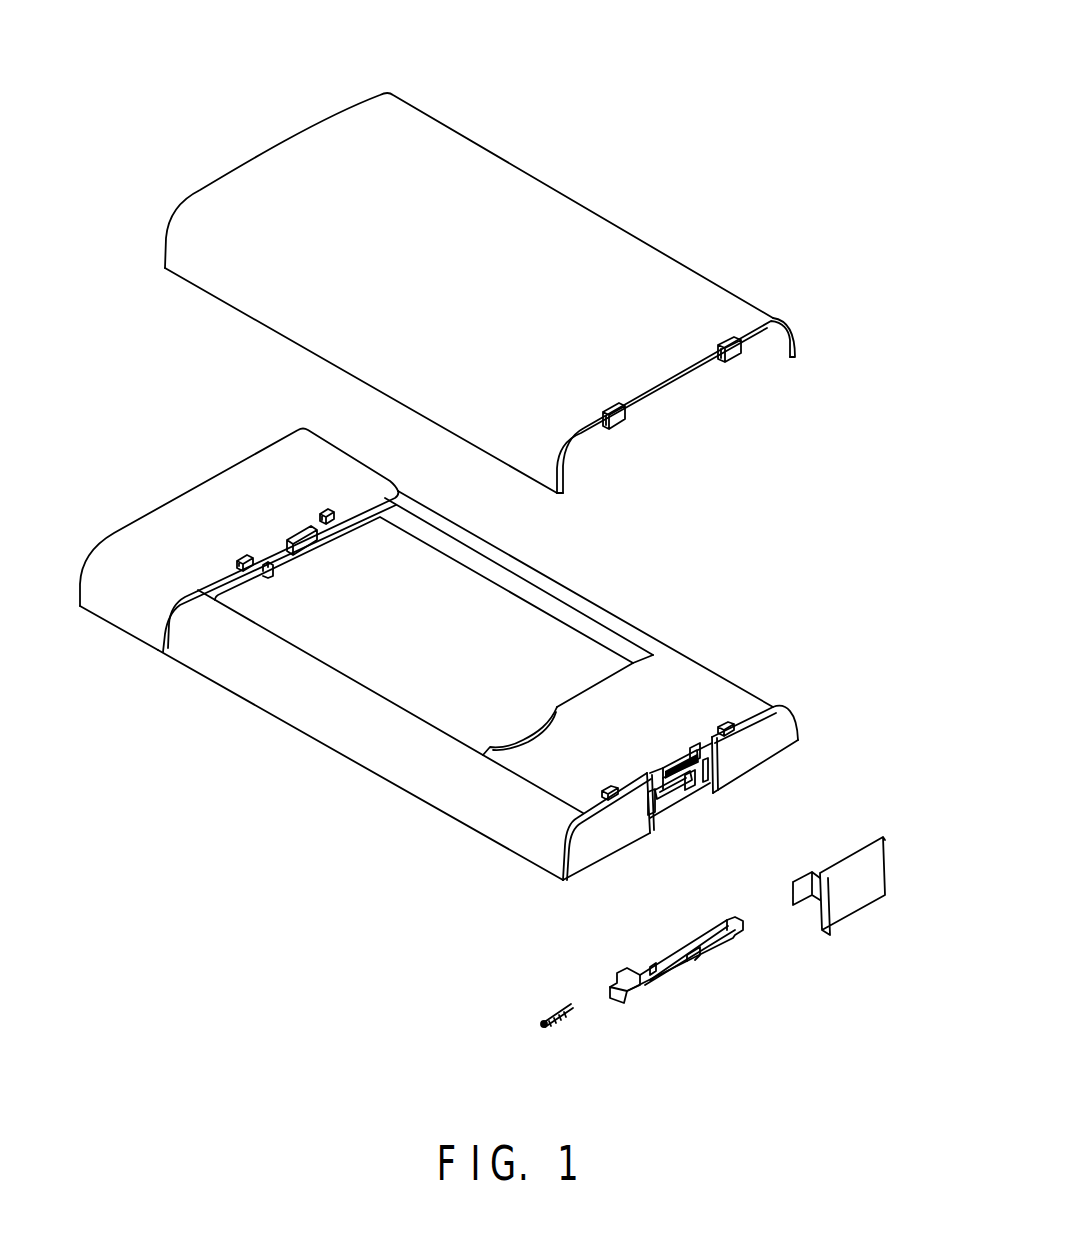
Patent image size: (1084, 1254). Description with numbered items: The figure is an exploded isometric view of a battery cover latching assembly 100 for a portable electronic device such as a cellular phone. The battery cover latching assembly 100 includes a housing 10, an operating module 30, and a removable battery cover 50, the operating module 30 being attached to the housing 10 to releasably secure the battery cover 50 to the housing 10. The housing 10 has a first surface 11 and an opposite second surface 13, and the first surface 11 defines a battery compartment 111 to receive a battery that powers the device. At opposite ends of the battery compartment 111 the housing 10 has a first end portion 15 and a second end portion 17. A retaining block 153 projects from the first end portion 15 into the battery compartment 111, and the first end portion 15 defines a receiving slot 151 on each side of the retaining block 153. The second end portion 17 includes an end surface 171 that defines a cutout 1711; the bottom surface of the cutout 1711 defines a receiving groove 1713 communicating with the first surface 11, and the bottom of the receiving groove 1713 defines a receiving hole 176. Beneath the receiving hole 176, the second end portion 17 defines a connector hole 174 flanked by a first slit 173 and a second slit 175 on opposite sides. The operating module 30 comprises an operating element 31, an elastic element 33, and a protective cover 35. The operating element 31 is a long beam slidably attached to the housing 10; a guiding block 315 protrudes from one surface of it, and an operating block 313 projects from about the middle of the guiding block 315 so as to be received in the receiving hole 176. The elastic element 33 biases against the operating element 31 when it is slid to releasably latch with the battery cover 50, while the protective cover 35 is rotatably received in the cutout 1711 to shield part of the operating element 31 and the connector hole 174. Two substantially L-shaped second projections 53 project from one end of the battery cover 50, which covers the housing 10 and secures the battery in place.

The battery cover latching assembly 100 is at (540, 60).
The battery cover 50 is at (477, 197).
The second projections 53 is at (733, 353).
The housing 10 is at (206, 438).
The first end portion 15 is at (208, 522).
The first surface 11 is at (345, 705).
The second surface 13 is at (390, 780).
The battery compartment 111 is at (300, 608).
The retaining block 153 is at (300, 536).
The receiving slot 151 is at (380, 542).
The second end portion 17 is at (686, 705).
The end surface 171 is at (760, 730).
The first slit 173 is at (707, 773).
The connector hole 174 is at (687, 785).
The second slit 175 is at (660, 808).
The receiving hole 176 is at (666, 752).
The cutout 1711 is at (678, 803).
The receiving groove 1713 is at (697, 747).
The operating module 30 is at (796, 977).
The operating element 31 is at (655, 985).
The operating block 313 is at (700, 955).
The guiding block 315 is at (650, 963).
The elastic element 33 is at (578, 1008).
The protective cover 35 is at (797, 897).